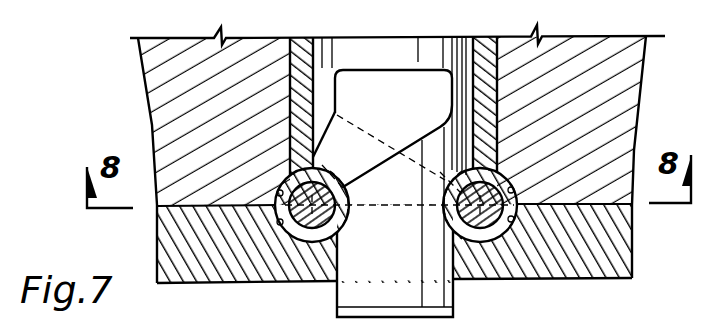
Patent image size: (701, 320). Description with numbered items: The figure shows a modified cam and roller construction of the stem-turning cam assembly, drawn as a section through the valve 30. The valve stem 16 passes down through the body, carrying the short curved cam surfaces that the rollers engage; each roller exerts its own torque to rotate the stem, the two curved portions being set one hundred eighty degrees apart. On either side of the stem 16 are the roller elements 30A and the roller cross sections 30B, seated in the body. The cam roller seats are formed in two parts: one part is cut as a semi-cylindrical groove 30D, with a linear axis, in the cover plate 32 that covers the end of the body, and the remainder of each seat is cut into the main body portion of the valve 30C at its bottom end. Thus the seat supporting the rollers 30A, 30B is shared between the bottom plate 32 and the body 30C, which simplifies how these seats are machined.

The valve stem 16 is at (392, 262).
The valve 30 is at (424, 128).
The eye 30A is at (302, 243).
The pin 30B is at (326, 238).
The main body portion of the valve 30C is at (287, 183).
The semi-cylindrical groove 30D is at (281, 224).
The cover plate 32 is at (615, 279).